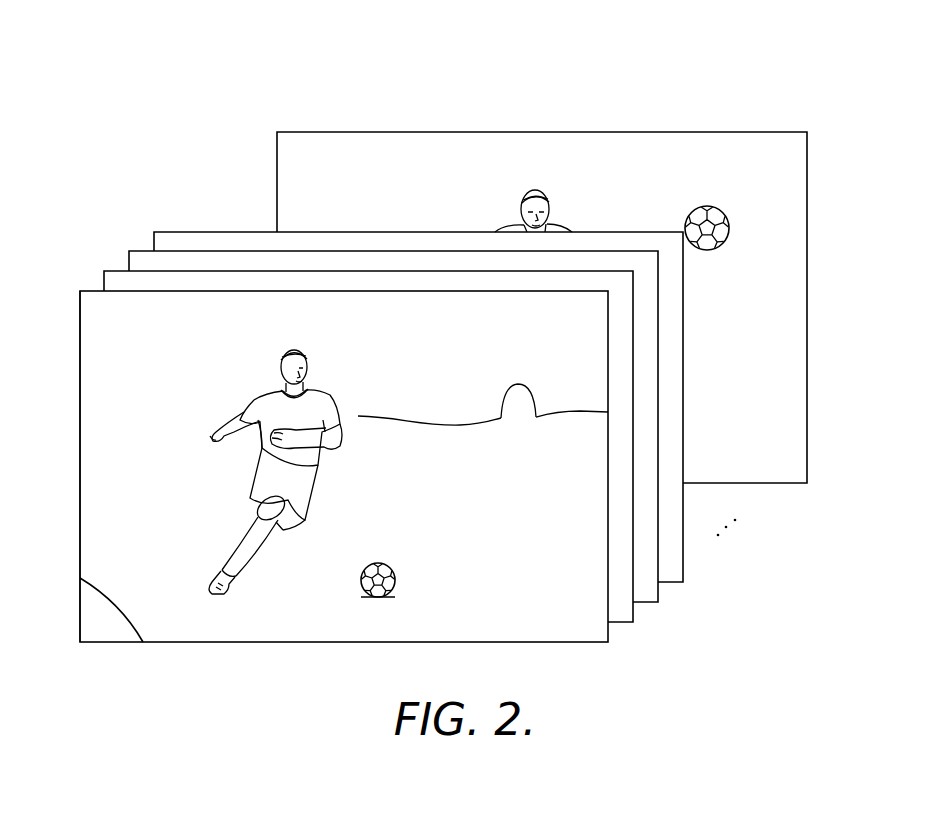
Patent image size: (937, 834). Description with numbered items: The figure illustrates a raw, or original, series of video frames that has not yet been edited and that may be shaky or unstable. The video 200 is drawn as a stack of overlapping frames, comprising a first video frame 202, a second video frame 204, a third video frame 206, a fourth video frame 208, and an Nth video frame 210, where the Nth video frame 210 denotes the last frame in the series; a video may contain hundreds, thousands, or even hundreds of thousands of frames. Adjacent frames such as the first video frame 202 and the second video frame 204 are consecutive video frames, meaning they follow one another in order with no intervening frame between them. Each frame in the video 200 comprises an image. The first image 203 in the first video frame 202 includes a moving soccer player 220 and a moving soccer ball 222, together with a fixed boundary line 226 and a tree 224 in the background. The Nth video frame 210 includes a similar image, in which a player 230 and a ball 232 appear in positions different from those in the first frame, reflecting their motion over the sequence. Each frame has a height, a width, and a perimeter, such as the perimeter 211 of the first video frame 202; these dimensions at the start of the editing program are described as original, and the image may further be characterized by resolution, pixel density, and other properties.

The video 200 is at (283, 49).
The first video frame 202 is at (520, 643).
The first image 203 is at (137, 462).
The second video frame 204 is at (630, 625).
The third video frame 206 is at (645, 604).
The fourth video frame 208 is at (667, 584).
The Nth video frame 210 is at (796, 484).
The perimeter 211 is at (74, 393).
The soccer player 220 is at (252, 390).
The soccer ball 222 is at (388, 561).
The tree 224 is at (523, 385).
The boundary line 226 is at (110, 600).
The player in Nth frame 230 is at (531, 191).
The ball in Nth frame 232 is at (704, 206).